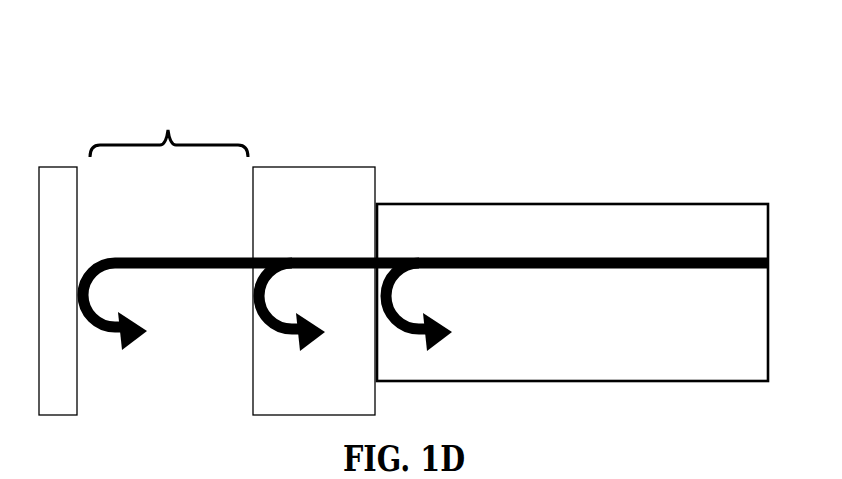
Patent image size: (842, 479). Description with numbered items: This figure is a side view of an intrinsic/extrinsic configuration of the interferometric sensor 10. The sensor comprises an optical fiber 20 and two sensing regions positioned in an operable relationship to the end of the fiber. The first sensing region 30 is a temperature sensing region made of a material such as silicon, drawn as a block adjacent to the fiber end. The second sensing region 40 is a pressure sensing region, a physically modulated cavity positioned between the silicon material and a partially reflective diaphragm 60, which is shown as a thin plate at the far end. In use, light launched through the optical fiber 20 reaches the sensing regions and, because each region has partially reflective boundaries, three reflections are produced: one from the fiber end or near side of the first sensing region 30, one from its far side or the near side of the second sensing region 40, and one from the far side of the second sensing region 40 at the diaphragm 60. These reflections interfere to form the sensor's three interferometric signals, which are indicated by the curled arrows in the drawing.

The interferometric sensor 10 is at (490, 111).
The optical fiber 20 is at (613, 238).
The first sensing region 30 is at (325, 210).
The second sensing region 40 is at (169, 118).
The partially reflective diaphragm 60 is at (62, 210).